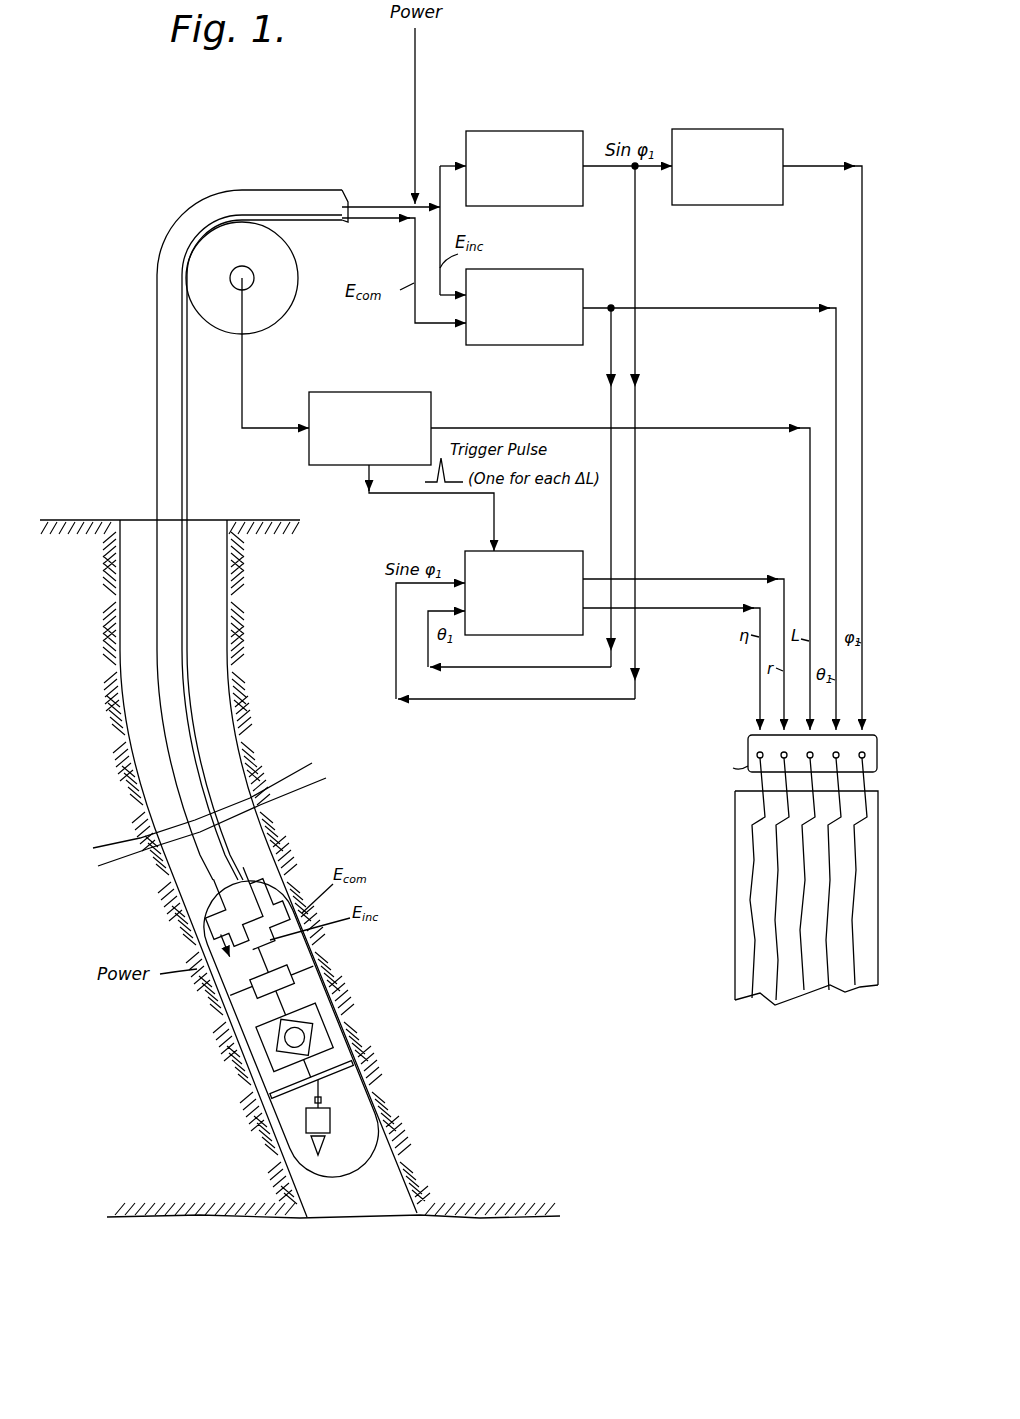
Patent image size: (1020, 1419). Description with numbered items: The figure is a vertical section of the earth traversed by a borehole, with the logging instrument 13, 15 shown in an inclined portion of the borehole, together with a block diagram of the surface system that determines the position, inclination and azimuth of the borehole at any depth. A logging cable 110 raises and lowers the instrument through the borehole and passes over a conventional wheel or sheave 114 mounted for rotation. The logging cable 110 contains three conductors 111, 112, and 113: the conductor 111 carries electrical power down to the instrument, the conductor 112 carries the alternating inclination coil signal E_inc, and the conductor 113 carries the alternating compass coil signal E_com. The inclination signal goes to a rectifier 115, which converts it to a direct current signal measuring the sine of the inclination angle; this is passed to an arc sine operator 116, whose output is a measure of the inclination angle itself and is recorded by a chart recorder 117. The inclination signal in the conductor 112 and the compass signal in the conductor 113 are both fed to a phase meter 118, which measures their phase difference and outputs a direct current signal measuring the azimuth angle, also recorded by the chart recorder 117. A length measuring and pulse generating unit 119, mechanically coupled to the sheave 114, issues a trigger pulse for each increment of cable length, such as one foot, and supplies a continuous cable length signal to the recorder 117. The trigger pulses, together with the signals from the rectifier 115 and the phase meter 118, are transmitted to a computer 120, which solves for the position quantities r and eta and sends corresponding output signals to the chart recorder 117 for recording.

The logging instrument 13 is at (321, 1023).
The logging instrument 15 is at (333, 993).
The logging cable 110 is at (193, 688).
The conductor 111 is at (414, 78).
The conductor 112 is at (370, 203).
The conductor 113 is at (390, 221).
The sheave 114 is at (270, 318).
The rectifier 115 is at (528, 130).
The arc sine operator 116 is at (723, 133).
The chart recorder 117 is at (735, 878).
The phase meter 118 is at (542, 268).
The length measuring and pulse generating unit 119 is at (357, 390).
The computer 120 is at (555, 529).